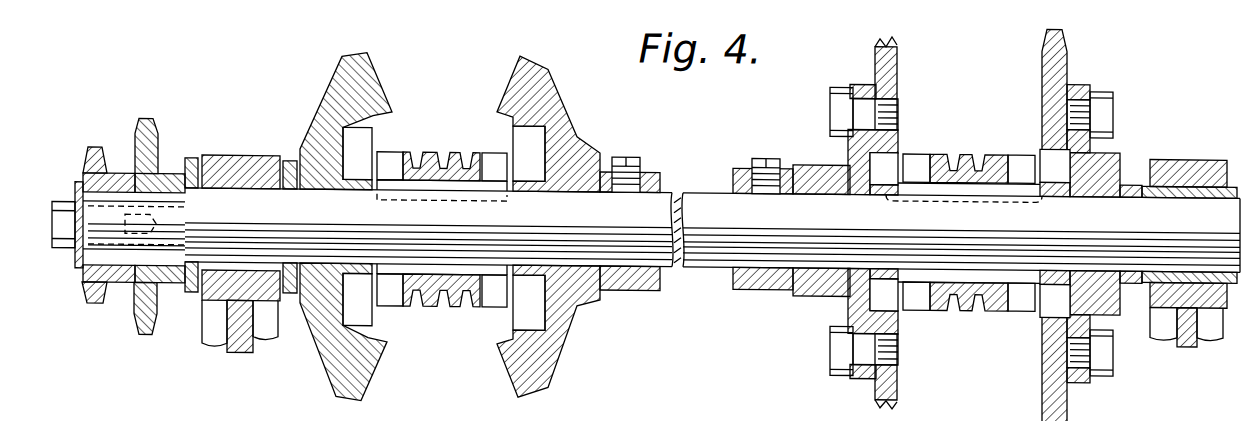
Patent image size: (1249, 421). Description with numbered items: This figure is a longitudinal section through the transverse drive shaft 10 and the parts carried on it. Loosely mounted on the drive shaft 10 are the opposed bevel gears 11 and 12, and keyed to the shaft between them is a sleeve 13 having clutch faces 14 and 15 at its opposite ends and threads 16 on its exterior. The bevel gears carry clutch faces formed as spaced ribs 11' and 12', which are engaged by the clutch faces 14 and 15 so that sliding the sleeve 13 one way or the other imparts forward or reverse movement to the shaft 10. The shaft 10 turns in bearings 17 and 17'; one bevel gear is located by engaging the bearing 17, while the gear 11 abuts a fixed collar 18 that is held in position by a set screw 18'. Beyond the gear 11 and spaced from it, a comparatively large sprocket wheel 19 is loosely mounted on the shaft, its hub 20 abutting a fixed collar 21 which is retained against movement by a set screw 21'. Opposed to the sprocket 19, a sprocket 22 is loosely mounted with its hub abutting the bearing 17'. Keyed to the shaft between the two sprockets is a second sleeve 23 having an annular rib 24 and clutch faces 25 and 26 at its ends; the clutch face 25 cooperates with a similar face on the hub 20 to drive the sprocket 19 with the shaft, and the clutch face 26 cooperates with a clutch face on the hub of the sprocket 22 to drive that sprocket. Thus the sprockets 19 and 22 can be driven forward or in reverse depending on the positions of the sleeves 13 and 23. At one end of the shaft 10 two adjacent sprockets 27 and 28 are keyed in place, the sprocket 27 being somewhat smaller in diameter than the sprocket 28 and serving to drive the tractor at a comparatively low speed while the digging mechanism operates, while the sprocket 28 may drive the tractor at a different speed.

The drive shaft 10 is at (702, 185).
The bevel gear 11 is at (548, 118).
The spaced ribs 11' is at (524, 331).
The bevel gear 12 is at (359, 119).
The spaced ribs 12' is at (364, 332).
The sleeve 13 is at (465, 165).
The clutch face 14 is at (385, 163).
The clutch face 15 is at (490, 158).
The threads 16 is at (432, 149).
The bearing 17 is at (241, 235).
The bearing 17' is at (1189, 235).
The fixed collar 18 is at (640, 213).
The set screw 18' is at (625, 154).
The sprocket wheel 19 is at (898, 73).
The hub 20 is at (847, 149).
The fixed collar 21 is at (762, 203).
The set screw 21' is at (778, 148).
The sprocket 22 is at (1065, 52).
The sleeve 23 is at (1007, 147).
The annular rib 24 is at (970, 143).
The clutch face 25 is at (915, 144).
The clutch face 26 is at (1020, 153).
The sprocket 27 is at (93, 159).
The sprocket 28 is at (147, 131).